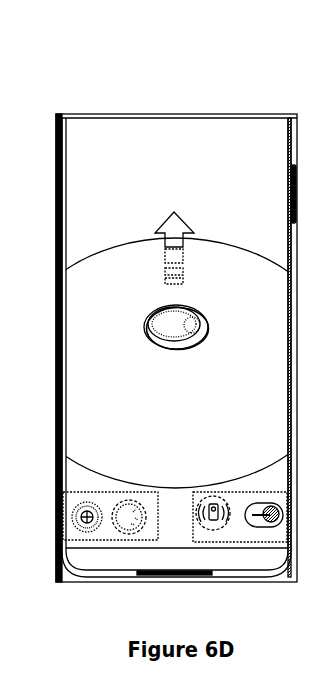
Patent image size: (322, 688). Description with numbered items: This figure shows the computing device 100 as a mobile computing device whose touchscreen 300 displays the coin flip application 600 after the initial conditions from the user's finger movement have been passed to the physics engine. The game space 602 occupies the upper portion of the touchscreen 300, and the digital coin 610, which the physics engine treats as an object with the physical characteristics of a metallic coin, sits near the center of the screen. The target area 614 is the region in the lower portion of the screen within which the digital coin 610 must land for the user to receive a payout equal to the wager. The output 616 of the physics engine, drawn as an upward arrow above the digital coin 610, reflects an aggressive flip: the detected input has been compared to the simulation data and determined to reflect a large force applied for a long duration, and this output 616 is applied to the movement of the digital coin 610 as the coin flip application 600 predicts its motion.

The computing device 100 is at (263, 113).
The touchscreen 300 is at (55, 145).
The coin flip application 600 is at (160, 70).
The game space 602 is at (167, 169).
The digital coin 610 is at (148, 334).
The target area 614 is at (164, 449).
The output 616 is at (157, 233).